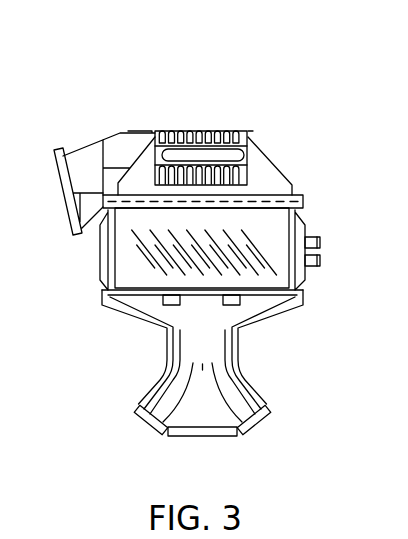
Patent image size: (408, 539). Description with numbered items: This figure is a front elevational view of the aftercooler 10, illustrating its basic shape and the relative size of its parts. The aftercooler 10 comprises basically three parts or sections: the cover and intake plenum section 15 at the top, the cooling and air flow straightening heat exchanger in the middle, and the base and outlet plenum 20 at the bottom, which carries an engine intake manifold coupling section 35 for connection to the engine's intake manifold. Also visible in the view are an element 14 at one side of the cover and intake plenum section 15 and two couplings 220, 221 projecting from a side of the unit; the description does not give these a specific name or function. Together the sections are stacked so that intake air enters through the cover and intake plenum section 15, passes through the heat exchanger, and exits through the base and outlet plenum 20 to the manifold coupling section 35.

The aftercooler 10 is at (125, 133).
The handle bar 14 is at (58, 175).
The cover and intake plenum section 15 is at (270, 157).
The base and outlet plenum 20 is at (147, 307).
The engine intake manifold coupling section 35 is at (140, 405).
The connector 220 is at (325, 249).
The connector 221 is at (325, 260).